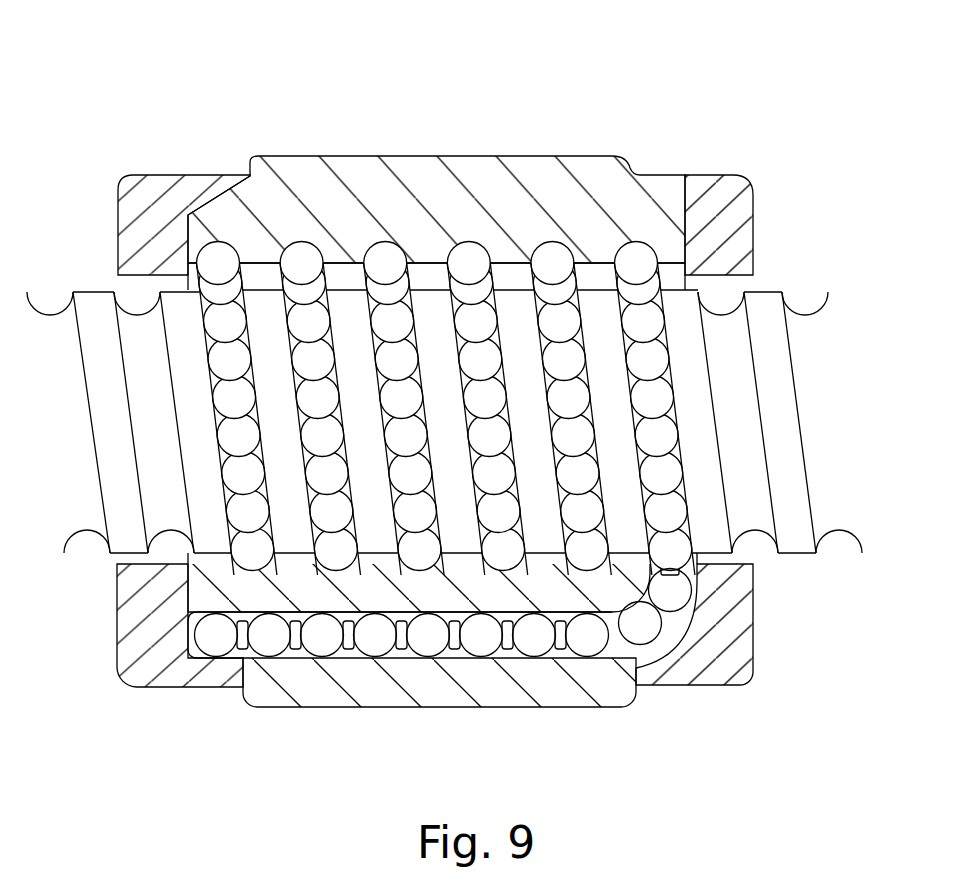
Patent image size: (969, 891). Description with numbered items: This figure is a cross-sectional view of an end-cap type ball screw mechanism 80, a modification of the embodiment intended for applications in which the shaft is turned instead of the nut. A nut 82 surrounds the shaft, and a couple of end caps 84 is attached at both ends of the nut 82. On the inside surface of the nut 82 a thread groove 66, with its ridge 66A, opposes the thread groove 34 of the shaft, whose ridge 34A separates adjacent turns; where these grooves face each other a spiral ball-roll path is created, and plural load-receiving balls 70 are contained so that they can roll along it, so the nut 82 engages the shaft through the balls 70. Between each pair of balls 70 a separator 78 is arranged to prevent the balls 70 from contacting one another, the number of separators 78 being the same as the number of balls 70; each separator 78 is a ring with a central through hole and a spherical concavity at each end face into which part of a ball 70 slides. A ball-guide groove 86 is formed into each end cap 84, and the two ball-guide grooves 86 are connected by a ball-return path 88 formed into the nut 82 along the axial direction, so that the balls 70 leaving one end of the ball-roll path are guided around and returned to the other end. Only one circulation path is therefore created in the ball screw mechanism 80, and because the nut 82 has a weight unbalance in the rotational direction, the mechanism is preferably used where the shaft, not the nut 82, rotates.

The ball screw mechanism 80 is at (480, 391).
The nut 82 is at (552, 150).
The end cap 84 is at (161, 190).
The ball-guide groove 86 is at (183, 620).
The ball-return path 88 is at (357, 637).
The ball 70 is at (230, 400).
The separator 78 is at (226, 463).
The thread groove 66 is at (387, 248).
The ridge 66A is at (337, 257).
The thread groove 34 is at (745, 310).
The ridge 34A is at (790, 338).